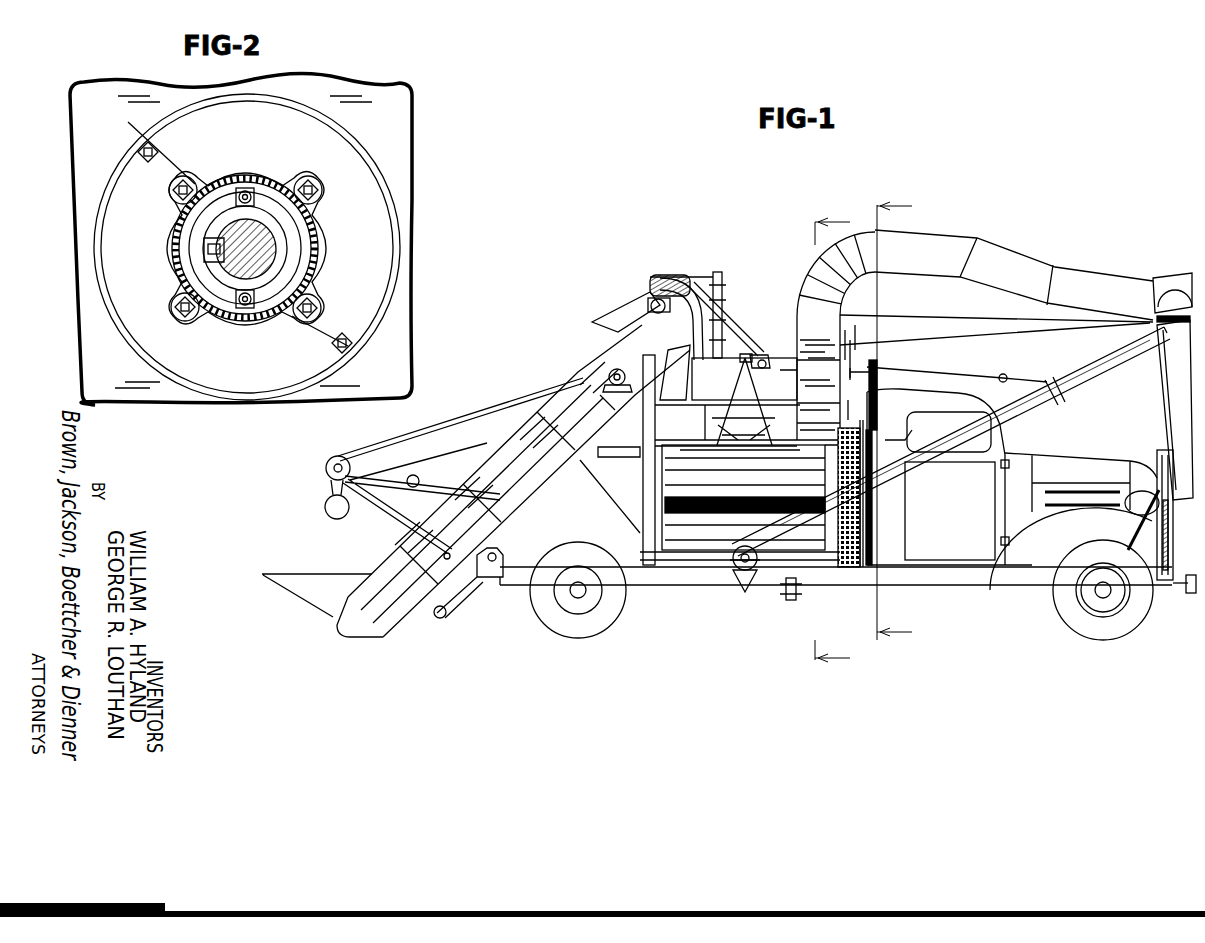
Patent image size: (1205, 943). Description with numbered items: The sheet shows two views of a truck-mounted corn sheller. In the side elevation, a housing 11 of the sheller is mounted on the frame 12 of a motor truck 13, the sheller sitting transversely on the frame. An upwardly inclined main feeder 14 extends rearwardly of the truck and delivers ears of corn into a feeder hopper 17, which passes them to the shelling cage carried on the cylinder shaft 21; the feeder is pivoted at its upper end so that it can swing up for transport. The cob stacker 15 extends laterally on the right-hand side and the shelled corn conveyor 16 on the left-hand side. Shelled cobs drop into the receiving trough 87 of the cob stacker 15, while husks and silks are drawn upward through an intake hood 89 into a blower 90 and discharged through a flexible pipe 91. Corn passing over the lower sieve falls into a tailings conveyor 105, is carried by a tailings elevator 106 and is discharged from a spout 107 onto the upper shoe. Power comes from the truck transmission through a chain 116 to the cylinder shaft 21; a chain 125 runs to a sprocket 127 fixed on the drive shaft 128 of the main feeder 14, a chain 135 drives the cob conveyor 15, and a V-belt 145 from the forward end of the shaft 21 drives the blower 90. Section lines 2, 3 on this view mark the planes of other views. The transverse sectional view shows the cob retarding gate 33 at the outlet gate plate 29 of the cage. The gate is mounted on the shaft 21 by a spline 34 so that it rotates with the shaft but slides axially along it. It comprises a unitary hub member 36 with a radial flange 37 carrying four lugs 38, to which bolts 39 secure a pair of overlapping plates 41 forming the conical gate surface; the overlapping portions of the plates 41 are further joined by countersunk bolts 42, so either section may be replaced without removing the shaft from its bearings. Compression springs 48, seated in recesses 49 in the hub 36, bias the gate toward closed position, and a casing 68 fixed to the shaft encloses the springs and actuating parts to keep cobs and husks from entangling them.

In FIG. 1, the housing 11 is at (783, 344).
In FIG. 1, the frame 12 is at (650, 590).
In FIG. 1, the motor truck 13 is at (1093, 453).
In FIG. 1, the main feeder 14 is at (490, 394).
In FIG. 1, the cob stacker 15 is at (1035, 408).
In FIG. 1, the shelled corn conveyor 16 is at (1022, 342).
In FIG. 1, the feeder hopper 17 is at (690, 365).
In FIG. 7, the cylinder shaft 21 is at (232, 240).
In FIG. 1, the cylinder shaft 21 is at (872, 445).
In FIG. 7, the metal plate 29 is at (395, 148).
In FIG. 7, the cob retarding gate 33 is at (402, 226).
In FIG. 7, the spline 34 is at (212, 256).
In FIG. 7, the hub member 36 is at (160, 254).
In FIG. 7, the radial flange 37 is at (308, 240).
In FIG. 7, the lugs 38 is at (228, 178).
In FIG. 7, the bolts 39 is at (172, 196).
In FIG. 7, the overlapping plates 41 is at (350, 148).
In FIG. 7, the countersunk bolts 42 is at (385, 374).
In FIG. 7, the compression springs 48 is at (238, 202).
In FIG. 7, the socket or recess 49 is at (262, 195).
In FIG. 7, the hub member or casing 68 is at (318, 252).
In FIG. 1, the receiving trough 87 is at (722, 520).
In FIG. 1, the intake hood 89 is at (737, 399).
In FIG. 1, the blower 90 is at (840, 413).
In FIG. 1, the flexible pipe 91 is at (965, 246).
In FIG. 1, the tailings conveyor 105 is at (722, 578).
In FIG. 1, the tailings elevator 106 is at (645, 466).
In FIG. 1, the spout 107 is at (648, 425).
In FIG. 1, the chain 116 is at (846, 580).
In FIG. 1, the chain 125 is at (733, 318).
In FIG. 1, the sprocket 127 is at (712, 280).
In FIG. 1, the drive shaft 128 is at (756, 270).
In FIG. 1, the chain 135 is at (790, 596).
In FIG. 1, the V-belt 145 is at (868, 400).
In FIG. 1, the section line 2- 2 is at (894, 421).
In FIG. 1, the section line 3- 3 is at (832, 441).